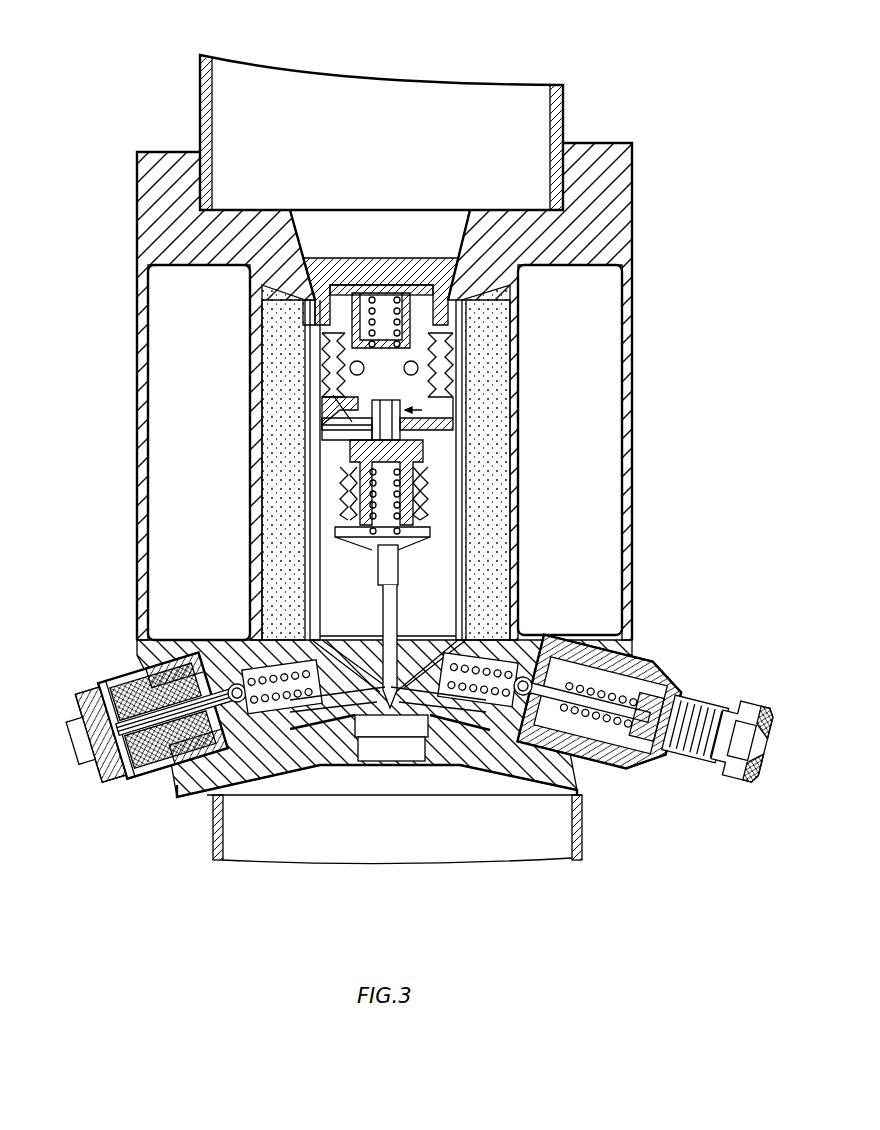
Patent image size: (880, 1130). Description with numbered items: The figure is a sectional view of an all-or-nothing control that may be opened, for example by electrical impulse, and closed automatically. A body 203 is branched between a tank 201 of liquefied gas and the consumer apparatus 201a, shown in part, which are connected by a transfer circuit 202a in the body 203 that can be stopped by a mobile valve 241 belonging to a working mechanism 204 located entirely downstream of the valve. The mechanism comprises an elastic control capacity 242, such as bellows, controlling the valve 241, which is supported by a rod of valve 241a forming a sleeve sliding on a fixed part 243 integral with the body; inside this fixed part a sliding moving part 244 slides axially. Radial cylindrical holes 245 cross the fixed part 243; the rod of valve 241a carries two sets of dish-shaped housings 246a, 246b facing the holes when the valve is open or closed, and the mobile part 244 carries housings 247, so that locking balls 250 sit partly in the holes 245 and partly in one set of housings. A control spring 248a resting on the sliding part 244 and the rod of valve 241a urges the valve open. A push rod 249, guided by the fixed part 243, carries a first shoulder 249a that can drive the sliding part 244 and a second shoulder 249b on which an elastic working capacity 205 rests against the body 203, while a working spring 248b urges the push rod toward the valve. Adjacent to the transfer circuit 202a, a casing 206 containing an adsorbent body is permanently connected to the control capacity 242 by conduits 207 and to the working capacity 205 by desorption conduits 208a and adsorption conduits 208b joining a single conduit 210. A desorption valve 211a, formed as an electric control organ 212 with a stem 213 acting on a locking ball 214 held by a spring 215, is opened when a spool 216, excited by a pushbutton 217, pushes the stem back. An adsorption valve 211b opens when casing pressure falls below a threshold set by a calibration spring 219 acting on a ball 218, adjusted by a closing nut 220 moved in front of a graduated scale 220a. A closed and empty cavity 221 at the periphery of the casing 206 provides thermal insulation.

The tank 201 is at (493, 181).
The consumer apparatus 201a is at (207, 800).
The transfer circuit 202a is at (440, 612).
The body 203 is at (398, 550).
The working mechanism 204 is at (445, 412).
The elastic working capacity 205 is at (355, 458).
The casing 206 is at (290, 530).
The conduits 207 is at (312, 560).
The desorption conduits 208a is at (305, 705).
The adsorption conduits 208b is at (465, 705).
The single conduit 210 is at (377, 627).
The desorption valve 211a is at (238, 797).
The adsorption valve 211b is at (528, 770).
The electric control organ 212 is at (107, 780).
The stem 213 is at (137, 683).
The locking ball 214 is at (160, 655).
The spring 215 is at (256, 715).
The spool 216 is at (125, 690).
The pushbutton 217 is at (82, 723).
The ball 218 is at (545, 655).
The calibration spring 219 is at (587, 668).
The closing nut 220 is at (747, 700).
The graduated scale 220a is at (688, 700).
The closed and empty cavity 221 is at (594, 486).
The mobile valve 241 is at (468, 262).
The rod of valve 241a is at (305, 312).
The elastic control capacity 242 is at (322, 340).
The fixed part 243 is at (330, 392).
The sliding moving part 244 is at (450, 380).
The cylindrical holes 245 is at (410, 325).
The dish-shaped housings 246a is at (418, 368).
The dish-shaped housings 246b is at (350, 368).
The dish-shaped housings 247 is at (330, 412).
The control spring 248a is at (400, 305).
The working spring 248b is at (345, 502).
The push rod 249 is at (440, 451).
The first shoulder 249a is at (430, 432).
The second shoulder 249b is at (340, 440).
The locking balls 250 is at (385, 350).